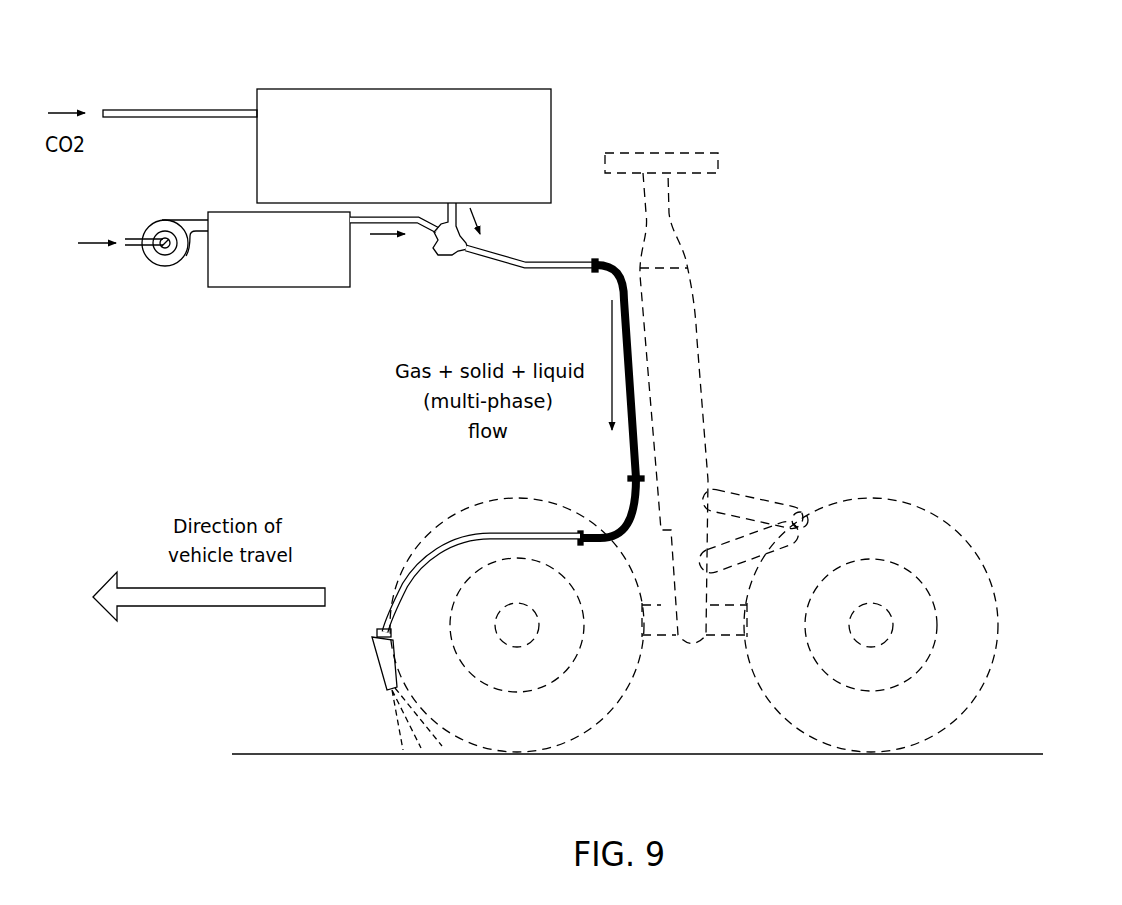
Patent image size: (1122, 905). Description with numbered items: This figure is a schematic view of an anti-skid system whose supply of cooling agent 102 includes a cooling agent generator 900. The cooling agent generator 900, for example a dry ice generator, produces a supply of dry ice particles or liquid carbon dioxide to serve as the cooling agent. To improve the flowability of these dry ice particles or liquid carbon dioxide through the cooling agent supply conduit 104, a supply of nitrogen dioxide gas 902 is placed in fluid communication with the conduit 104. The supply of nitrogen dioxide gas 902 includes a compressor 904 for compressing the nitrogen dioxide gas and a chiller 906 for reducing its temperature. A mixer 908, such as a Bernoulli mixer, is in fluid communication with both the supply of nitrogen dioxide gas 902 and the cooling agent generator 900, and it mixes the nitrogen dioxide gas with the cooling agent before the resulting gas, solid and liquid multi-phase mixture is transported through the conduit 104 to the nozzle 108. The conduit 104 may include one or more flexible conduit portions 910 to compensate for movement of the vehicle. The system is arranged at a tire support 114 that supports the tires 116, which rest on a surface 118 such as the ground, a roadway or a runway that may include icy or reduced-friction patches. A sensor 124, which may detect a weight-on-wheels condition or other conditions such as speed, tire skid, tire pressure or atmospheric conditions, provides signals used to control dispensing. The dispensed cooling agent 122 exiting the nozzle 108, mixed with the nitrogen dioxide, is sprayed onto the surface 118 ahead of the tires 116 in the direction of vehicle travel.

The supply of cooling agent 102 is at (238, 95).
The cooling agent generator 900 is at (510, 107).
The supply of nitrogen dioxide gas 902 is at (262, 297).
The compressor 904 is at (170, 272).
The chiller 906 is at (294, 270).
The mixer 908 is at (450, 252).
The cooling agent supply conduit 104 is at (560, 270).
The flexible conduit portion 910 is at (648, 495).
The tire support 114 is at (692, 404).
The tire 116 is at (760, 678).
The sensor 124 is at (748, 496).
The nozzle 108 is at (380, 661).
The dispensed cooling agent 122 is at (384, 727).
The surface 118 is at (984, 750).